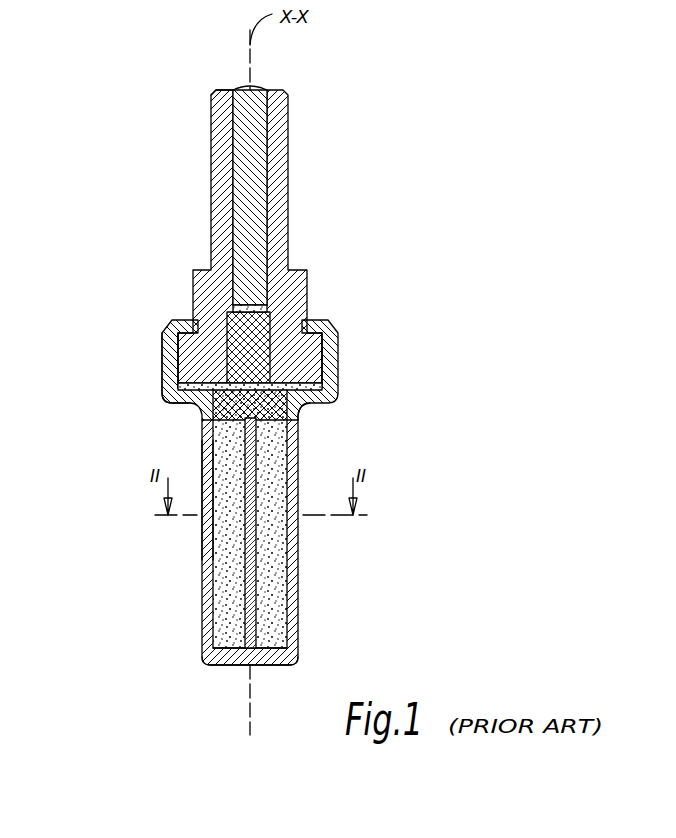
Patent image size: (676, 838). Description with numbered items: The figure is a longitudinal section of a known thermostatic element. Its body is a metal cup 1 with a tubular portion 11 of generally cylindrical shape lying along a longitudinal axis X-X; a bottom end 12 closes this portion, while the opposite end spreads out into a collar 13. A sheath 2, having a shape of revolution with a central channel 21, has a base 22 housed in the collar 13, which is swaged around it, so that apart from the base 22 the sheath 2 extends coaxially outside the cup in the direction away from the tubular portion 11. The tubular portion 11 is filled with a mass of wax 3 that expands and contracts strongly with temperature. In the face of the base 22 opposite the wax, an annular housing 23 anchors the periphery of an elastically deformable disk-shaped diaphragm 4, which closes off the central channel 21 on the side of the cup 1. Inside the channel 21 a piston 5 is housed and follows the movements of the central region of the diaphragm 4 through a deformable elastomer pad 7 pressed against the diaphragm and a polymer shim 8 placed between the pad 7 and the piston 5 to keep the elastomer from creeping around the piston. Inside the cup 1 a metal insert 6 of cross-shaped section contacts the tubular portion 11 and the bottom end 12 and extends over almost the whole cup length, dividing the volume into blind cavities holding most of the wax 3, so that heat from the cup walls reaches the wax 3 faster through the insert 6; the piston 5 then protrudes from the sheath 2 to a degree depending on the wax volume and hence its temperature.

The metal cup 1 is at (154, 514).
The sheath 2 is at (296, 203).
The mass of wax 3 is at (217, 583).
The diaphragm 4 is at (202, 432).
The piston 5 is at (212, 101).
The metal insert 6 is at (257, 557).
The pad 7 is at (235, 310).
The shim 8 is at (218, 245).
The tubular portion 11 is at (203, 552).
The bottom end 12 is at (230, 668).
The collar 13 is at (165, 368).
The central channel 21 is at (265, 85).
The base 22 is at (338, 350).
The annular housing 23 is at (313, 408).